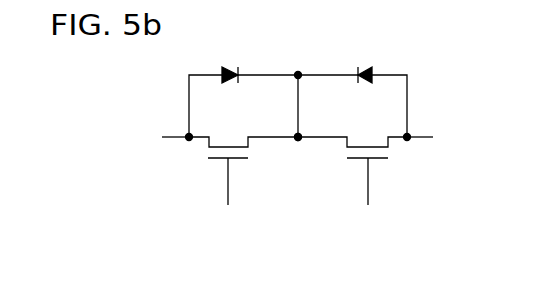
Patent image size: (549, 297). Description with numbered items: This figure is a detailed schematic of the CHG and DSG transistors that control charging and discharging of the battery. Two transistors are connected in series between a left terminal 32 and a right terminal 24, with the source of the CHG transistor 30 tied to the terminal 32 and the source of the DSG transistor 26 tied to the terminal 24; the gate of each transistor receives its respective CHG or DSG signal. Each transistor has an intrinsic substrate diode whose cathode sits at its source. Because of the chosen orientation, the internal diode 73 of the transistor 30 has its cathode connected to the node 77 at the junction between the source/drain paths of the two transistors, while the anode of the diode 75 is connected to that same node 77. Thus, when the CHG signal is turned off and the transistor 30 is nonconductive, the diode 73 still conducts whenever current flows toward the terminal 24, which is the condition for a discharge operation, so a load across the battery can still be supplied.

The internal diode 73 is at (233, 69).
The diode 75 is at (365, 68).
The terminal 32 is at (176, 134).
The terminal 24 is at (423, 134).
The transistor 30 is at (205, 142).
The discharge transistor 26 is at (392, 143).
The node 77 is at (299, 142).